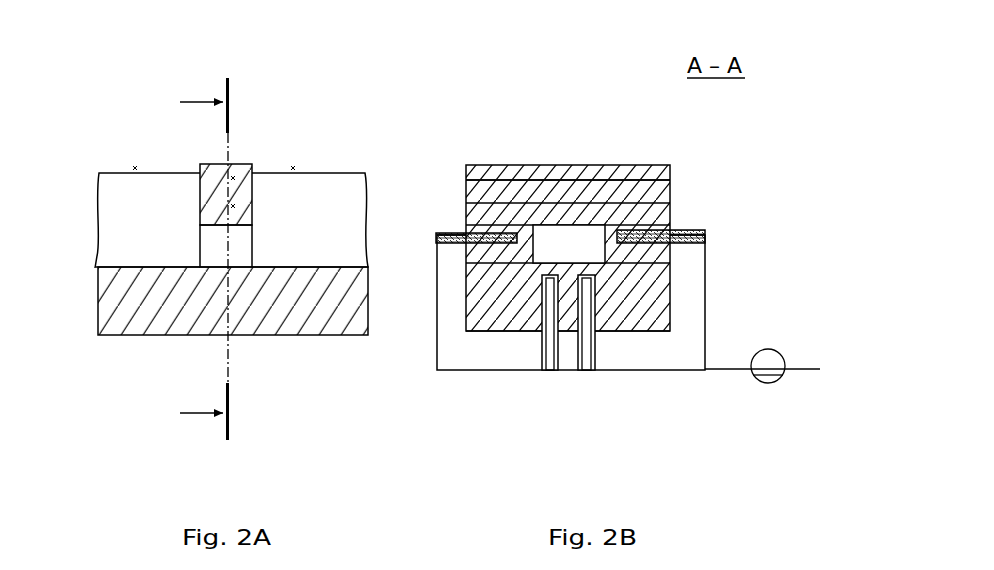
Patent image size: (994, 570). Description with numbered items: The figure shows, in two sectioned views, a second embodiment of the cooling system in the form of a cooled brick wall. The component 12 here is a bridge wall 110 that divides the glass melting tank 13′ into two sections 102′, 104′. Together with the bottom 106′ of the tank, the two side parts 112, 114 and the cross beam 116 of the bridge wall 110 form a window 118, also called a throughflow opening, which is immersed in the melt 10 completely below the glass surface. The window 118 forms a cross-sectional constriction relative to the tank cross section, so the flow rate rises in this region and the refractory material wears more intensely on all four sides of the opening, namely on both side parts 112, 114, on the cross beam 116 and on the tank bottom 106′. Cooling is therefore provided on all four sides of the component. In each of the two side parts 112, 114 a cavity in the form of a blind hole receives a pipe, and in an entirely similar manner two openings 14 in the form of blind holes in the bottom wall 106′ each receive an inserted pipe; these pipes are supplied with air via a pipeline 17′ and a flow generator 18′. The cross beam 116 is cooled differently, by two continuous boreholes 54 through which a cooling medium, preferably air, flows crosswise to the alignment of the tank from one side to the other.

In FIG. 2A, the melt 10 is at (151, 231).
In FIG. 2A, the component 12 is at (253, 168).
In FIG. 2B, the component 12 is at (535, 165).
In FIG. 2A, the bridge wall 110 is at (274, 163).
In FIG. 2B, the bridge wall 110 is at (568, 195).
In FIG. 2A, the glass melting tank 13′ is at (98, 126).
In FIG. 2B, the opening 14 is at (582, 340).
In FIG. 2B, the pipeline 17′ is at (687, 372).
In FIG. 2B, the flow generator 18′ is at (766, 373).
In FIG. 2B, the continuous boreholes 54 is at (595, 203).
In FIG. 2A, the section 102′ is at (128, 247).
In FIG. 2A, the section 104′ is at (333, 180).
In FIG. 2A, the bottom 106′ is at (268, 318).
In FIG. 2B, the bottom 106′ is at (483, 307).
In FIG. 2B, the side part 112 is at (580, 246).
In FIG. 2B, the side part 114 is at (493, 223).
In FIG. 2B, the cross beam 116 is at (603, 195).
In FIG. 2B, the window 118 is at (603, 225).